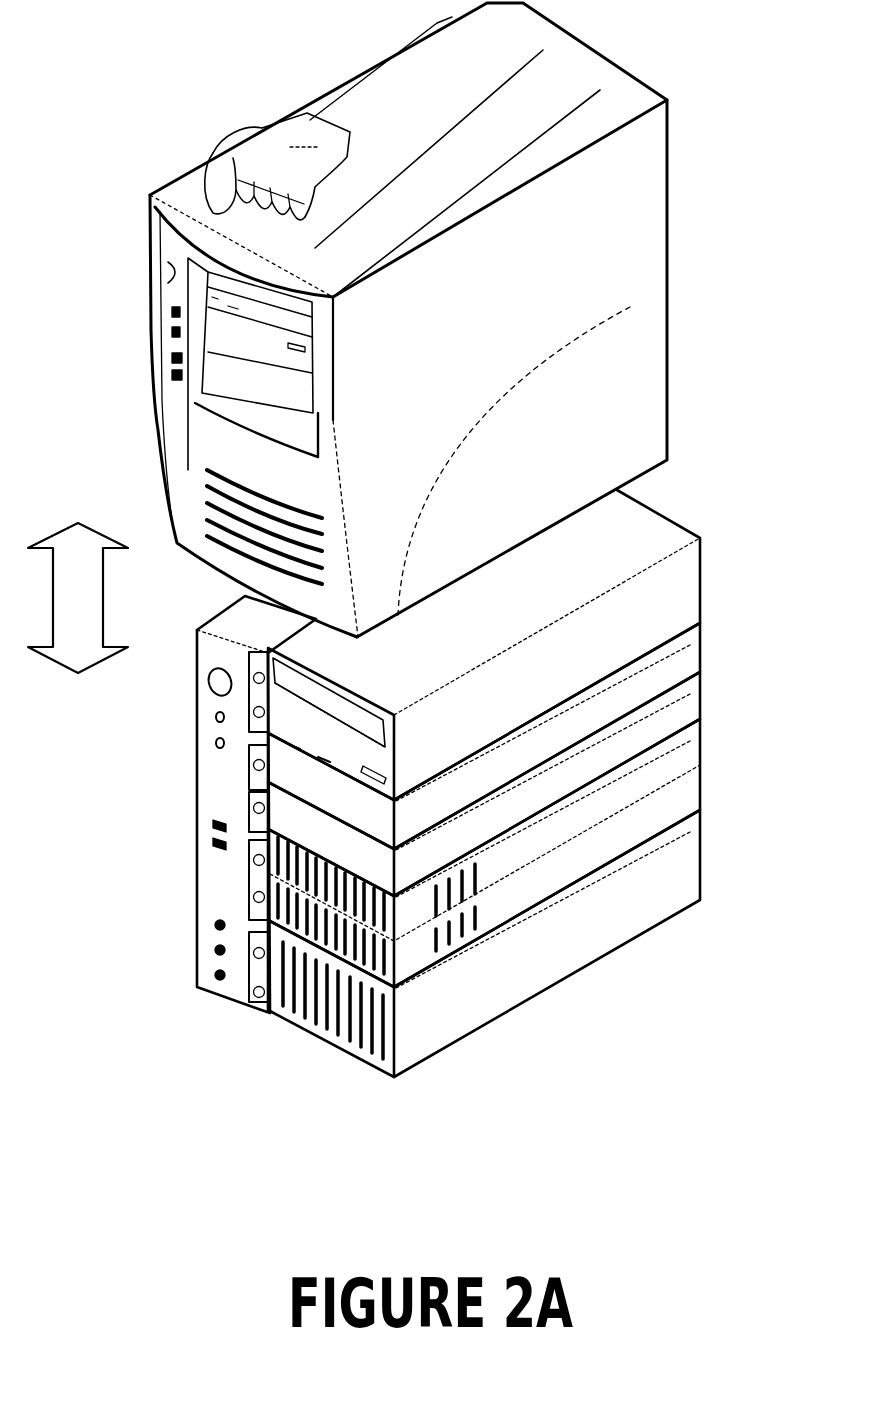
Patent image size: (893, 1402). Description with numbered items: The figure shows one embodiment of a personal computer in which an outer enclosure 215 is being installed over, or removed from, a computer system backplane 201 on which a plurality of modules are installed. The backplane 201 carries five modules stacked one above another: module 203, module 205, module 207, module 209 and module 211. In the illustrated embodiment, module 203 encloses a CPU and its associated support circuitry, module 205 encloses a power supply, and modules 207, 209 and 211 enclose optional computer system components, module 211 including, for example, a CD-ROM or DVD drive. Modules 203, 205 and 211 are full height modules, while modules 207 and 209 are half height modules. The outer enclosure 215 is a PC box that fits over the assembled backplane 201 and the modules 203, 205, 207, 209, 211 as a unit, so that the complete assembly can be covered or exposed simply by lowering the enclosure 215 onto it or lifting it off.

The computer system backplane 201 is at (198, 886).
The module 203 is at (701, 791).
The module 205 is at (701, 861).
The module 207 is at (701, 697).
The module 209 is at (701, 653).
The module 211 is at (701, 578).
The outer enclosure 215 is at (658, 263).